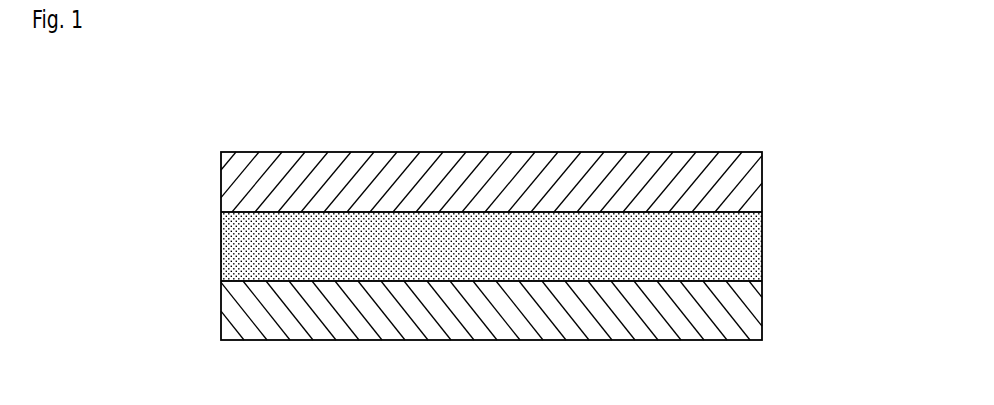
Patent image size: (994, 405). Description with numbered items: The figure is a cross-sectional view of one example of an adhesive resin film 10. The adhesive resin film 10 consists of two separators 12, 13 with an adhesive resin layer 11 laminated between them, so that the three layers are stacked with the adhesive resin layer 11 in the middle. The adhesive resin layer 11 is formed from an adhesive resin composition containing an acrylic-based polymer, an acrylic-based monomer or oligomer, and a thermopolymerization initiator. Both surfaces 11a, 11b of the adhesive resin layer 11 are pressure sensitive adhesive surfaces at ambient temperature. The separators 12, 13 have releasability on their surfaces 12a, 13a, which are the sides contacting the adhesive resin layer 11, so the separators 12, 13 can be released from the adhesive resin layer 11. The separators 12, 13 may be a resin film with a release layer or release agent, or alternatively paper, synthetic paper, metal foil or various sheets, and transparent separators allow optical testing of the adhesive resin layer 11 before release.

The adhesive resin film 10 is at (725, 147).
The adhesive resin layer 11 is at (743, 241).
The separator 12 is at (742, 178).
The separator 13 is at (742, 307).
The surface of adhesive resin layer 11a is at (287, 212).
The surface of adhesive resin layer 11b is at (280, 282).
The release surface of separator 12a is at (245, 212).
The release surface of separator 13a is at (245, 281).